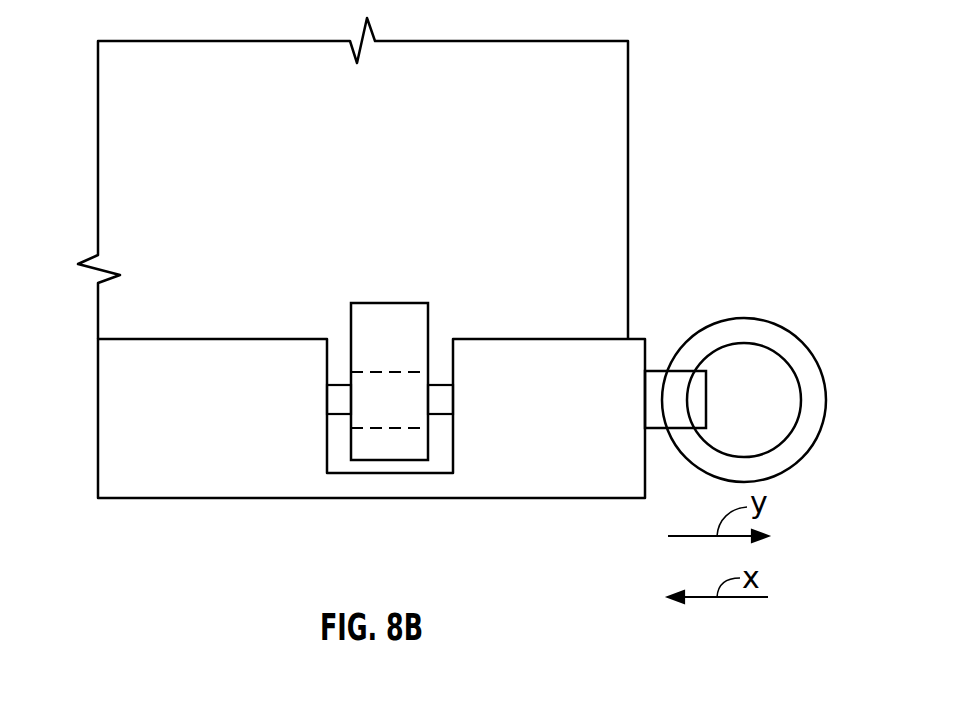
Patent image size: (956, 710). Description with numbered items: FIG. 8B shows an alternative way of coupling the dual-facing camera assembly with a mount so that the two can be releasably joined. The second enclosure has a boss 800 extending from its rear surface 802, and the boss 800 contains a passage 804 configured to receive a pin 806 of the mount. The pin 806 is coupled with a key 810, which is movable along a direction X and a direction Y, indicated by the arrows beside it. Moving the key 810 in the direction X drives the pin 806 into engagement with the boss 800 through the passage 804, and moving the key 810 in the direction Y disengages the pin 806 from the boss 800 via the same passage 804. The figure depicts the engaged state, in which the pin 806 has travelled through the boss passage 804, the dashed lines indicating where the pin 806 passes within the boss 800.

The boss 800 is at (406, 313).
The rear surface 802 is at (628, 172).
The passage 804 is at (383, 392).
The pin 806 is at (343, 405).
The key 810 is at (780, 338).